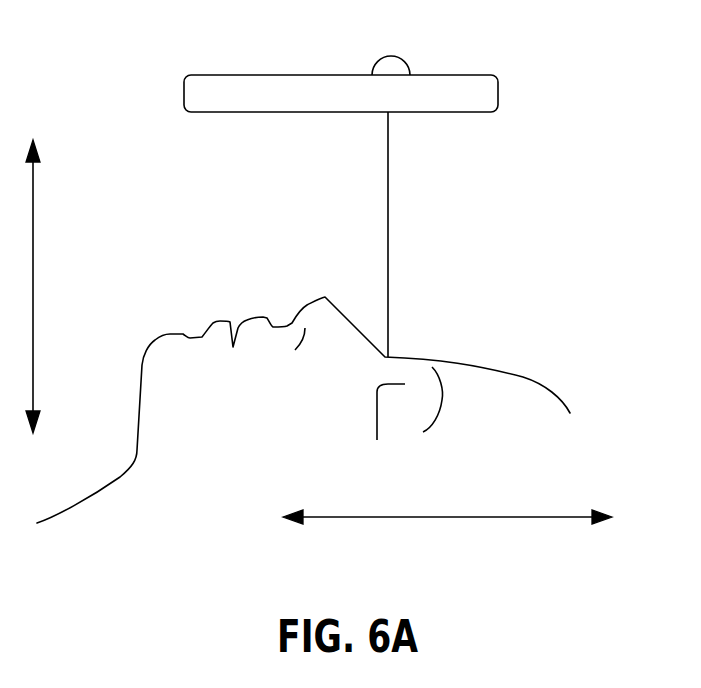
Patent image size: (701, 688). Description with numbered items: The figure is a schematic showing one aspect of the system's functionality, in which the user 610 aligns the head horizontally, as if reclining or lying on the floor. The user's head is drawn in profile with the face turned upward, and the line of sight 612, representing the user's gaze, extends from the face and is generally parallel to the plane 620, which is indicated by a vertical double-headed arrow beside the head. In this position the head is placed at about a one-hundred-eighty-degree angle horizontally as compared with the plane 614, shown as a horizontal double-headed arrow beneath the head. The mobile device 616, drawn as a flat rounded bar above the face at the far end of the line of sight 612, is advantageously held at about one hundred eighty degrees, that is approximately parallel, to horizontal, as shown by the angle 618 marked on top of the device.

The user 610 is at (576, 347).
The line of sight 612 is at (387, 238).
The plane 614 is at (412, 518).
The mobile device 616 is at (458, 113).
The angle 618 is at (373, 63).
The plane 620 is at (33, 277).